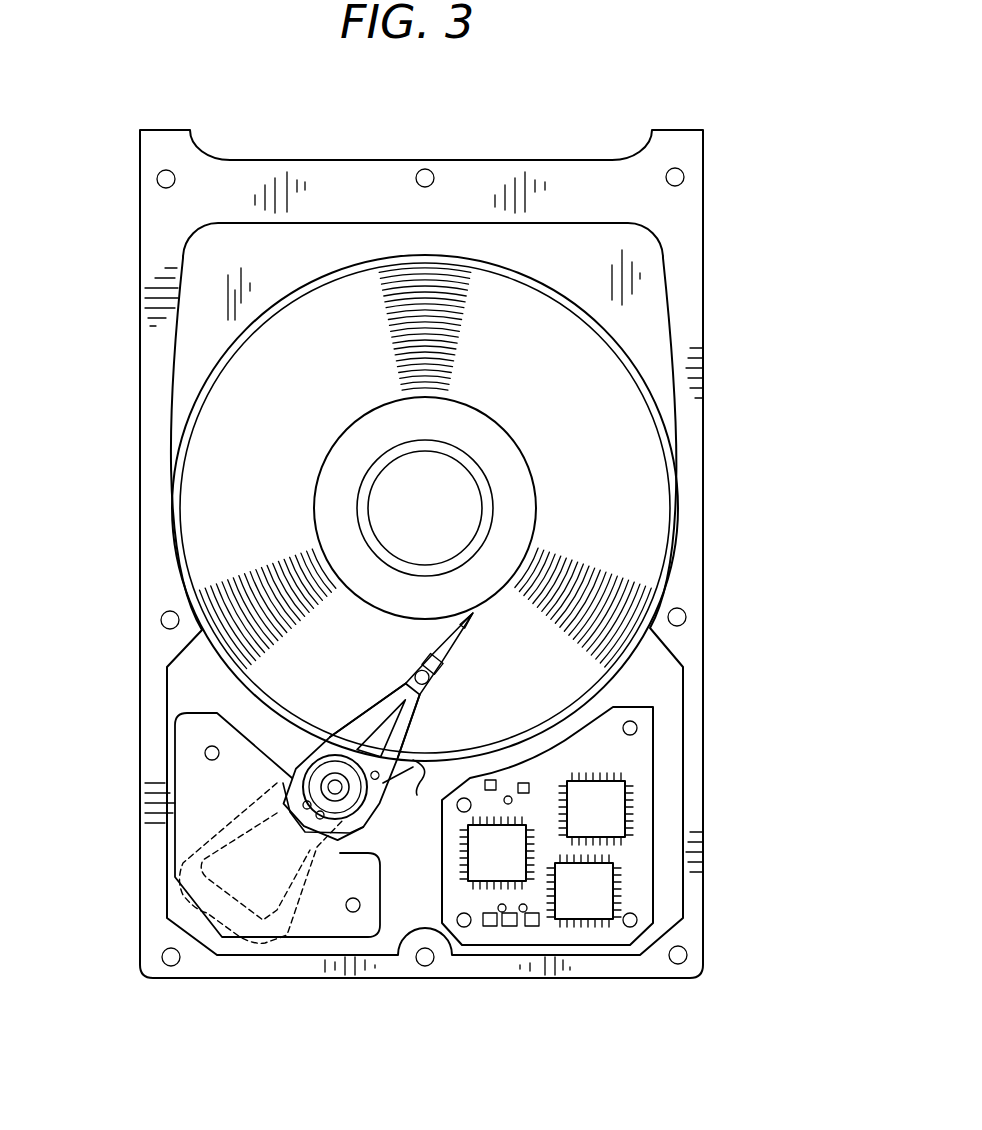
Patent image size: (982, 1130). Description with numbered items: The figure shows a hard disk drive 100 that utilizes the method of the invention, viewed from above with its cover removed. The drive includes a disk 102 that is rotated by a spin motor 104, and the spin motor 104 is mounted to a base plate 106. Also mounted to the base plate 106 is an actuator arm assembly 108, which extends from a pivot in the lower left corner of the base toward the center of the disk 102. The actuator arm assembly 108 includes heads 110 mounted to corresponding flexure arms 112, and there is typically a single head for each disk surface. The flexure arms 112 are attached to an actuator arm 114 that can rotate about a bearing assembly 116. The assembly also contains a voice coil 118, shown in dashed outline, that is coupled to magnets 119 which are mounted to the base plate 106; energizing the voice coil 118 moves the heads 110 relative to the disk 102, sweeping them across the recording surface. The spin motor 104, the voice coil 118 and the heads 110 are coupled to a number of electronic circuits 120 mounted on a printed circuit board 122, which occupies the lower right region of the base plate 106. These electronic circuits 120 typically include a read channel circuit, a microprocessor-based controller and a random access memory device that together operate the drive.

The hard disk drive 100 is at (431, 500).
The disk 102 is at (582, 389).
The spin motor 104 is at (515, 470).
The base plate 106 is at (208, 263).
The actuator arm assembly 108 is at (433, 714).
The heads 110 is at (480, 614).
The flexure arms 112 is at (437, 645).
The actuator arm 114 is at (385, 703).
The bearing assembly 116 is at (363, 808).
The voice coil 118 is at (283, 903).
The magnets 119 is at (205, 797).
The electronic circuits 120 is at (613, 808).
The printed circuit board 122 is at (637, 747).